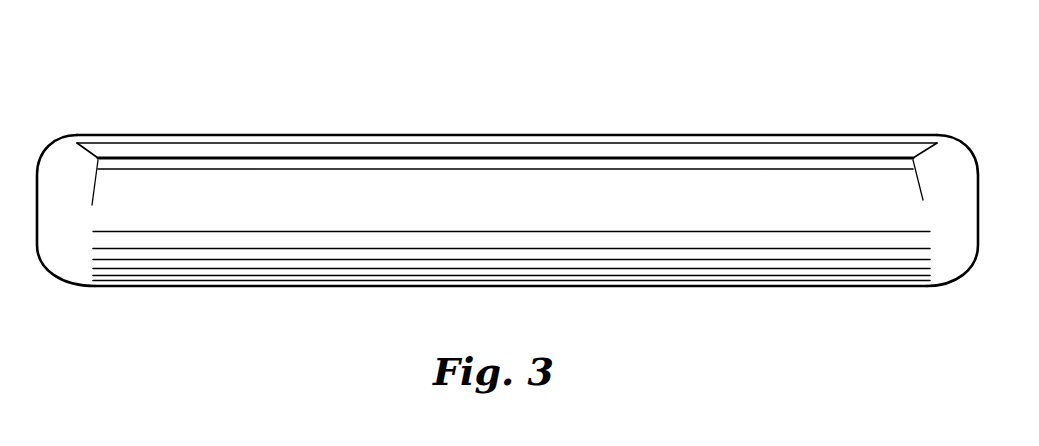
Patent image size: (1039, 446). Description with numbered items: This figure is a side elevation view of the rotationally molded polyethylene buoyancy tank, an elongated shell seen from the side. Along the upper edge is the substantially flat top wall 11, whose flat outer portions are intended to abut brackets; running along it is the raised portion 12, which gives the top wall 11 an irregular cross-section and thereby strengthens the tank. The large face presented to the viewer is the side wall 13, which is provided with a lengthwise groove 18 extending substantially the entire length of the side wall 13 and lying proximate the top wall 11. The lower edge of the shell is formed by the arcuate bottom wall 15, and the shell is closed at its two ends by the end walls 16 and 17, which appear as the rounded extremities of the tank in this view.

The top wall 11 is at (302, 143).
The raised portion 12 is at (442, 133).
The side wall 13 is at (640, 215).
The arcuate bottom wall 15 is at (383, 283).
The end wall 16 is at (37, 205).
The end wall 17 is at (976, 204).
The lengthwise groove 18 is at (633, 160).